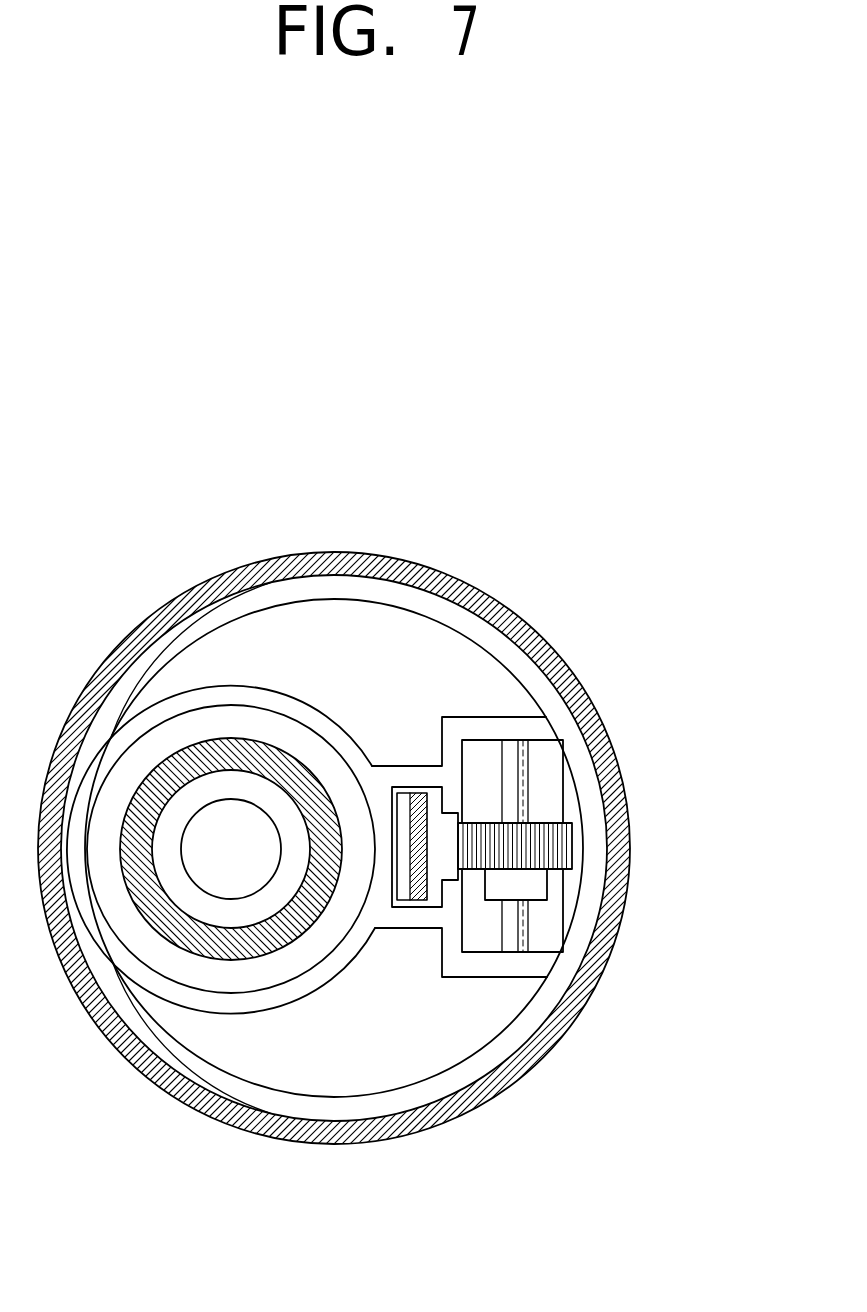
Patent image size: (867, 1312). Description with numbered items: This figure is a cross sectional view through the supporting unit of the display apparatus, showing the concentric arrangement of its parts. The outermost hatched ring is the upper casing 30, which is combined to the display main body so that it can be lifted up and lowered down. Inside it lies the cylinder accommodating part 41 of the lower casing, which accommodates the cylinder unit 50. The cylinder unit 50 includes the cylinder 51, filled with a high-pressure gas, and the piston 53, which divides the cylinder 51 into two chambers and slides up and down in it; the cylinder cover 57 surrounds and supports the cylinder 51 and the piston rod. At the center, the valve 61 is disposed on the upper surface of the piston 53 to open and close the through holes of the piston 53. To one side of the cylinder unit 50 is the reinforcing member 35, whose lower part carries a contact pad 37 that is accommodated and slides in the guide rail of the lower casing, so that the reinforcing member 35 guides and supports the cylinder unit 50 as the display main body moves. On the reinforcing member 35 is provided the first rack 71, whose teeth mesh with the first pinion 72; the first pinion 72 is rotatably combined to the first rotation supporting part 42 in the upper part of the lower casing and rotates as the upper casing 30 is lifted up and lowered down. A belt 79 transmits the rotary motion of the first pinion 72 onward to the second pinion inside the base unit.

The upper casing 30 is at (145, 1077).
The reinforcing member 35 is at (397, 908).
The contact pad 37 is at (440, 908).
The cylinder accommodating part 41 is at (255, 1100).
The first rotation supporting part 42 is at (530, 777).
The cylinder unit 50 is at (221, 702).
The cylinder 51 is at (243, 770).
The piston 53 is at (182, 803).
The cylinder cover 57 is at (307, 747).
The valve 61 is at (227, 899).
The first rack 71 is at (473, 953).
The first pinion 72 is at (572, 840).
The belt 79 is at (548, 882).